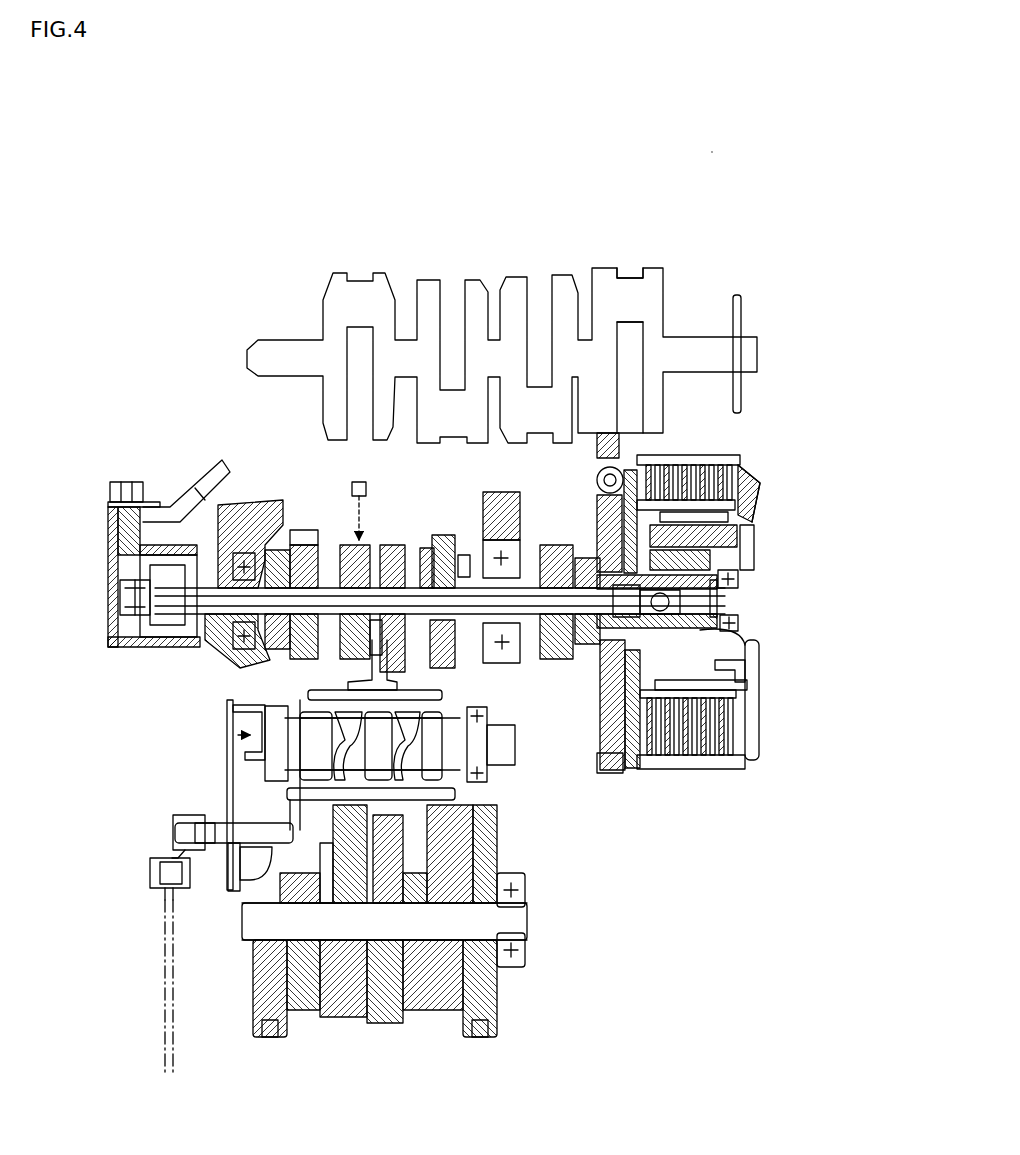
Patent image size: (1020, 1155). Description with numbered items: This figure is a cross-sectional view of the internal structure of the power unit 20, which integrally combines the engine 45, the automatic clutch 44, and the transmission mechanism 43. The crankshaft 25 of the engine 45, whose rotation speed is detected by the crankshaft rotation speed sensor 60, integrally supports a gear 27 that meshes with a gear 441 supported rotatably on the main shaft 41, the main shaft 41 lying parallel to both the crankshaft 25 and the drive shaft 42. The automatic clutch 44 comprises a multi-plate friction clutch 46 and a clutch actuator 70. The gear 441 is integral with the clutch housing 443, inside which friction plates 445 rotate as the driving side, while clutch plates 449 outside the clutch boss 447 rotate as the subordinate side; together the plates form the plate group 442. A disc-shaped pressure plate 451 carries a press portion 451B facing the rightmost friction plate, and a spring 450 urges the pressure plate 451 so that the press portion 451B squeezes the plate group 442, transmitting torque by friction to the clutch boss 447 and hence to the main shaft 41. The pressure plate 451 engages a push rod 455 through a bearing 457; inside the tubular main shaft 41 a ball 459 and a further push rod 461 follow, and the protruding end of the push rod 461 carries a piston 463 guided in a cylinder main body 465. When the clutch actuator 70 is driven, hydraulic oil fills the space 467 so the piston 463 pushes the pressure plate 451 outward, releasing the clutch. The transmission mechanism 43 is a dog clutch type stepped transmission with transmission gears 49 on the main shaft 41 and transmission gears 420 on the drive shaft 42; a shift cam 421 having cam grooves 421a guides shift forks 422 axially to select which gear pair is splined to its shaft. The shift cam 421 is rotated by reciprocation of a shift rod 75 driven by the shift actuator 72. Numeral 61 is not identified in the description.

The power unit 20 is at (712, 152).
The crankshaft 25 is at (560, 268).
The gear 27 is at (617, 432).
The main shaft 41 is at (467, 580).
The drive shaft 42 is at (528, 917).
The transmission mechanism 43 is at (598, 897).
The automatic clutch 44 is at (834, 540).
The engine 45 is at (651, 255).
The friction clutch 46 is at (765, 470).
The transmission gears 49 is at (412, 545).
The crankshaft rotation speed sensor 60 is at (742, 300).
The shift actuator 61 is at (352, 480).
The clutch actuator 70 is at (222, 455).
The shift actuator 72 is at (175, 1055).
The shift rod 75 is at (166, 900).
The transmission gears 420 is at (506, 850).
The shift cam 421 is at (304, 702).
The cam grooves 421a is at (432, 735).
The shift forks 422 is at (340, 668).
The gear 441 is at (598, 447).
The plate group 442 is at (685, 765).
The clutch housing 443 is at (687, 455).
The friction plates 445 is at (756, 465).
The clutch boss 447 is at (752, 690).
The clutch plates 449 is at (712, 465).
The spring 450 is at (749, 520).
The pressure plate 451 is at (752, 492).
The press portion 451B is at (748, 757).
The push rod 455 is at (738, 580).
The bearing 457 is at (746, 672).
The ball 459 is at (740, 623).
The push rod 461 is at (357, 548).
The piston 463 is at (205, 565).
The cylinder main body 465 is at (133, 648).
The space 467 is at (135, 598).